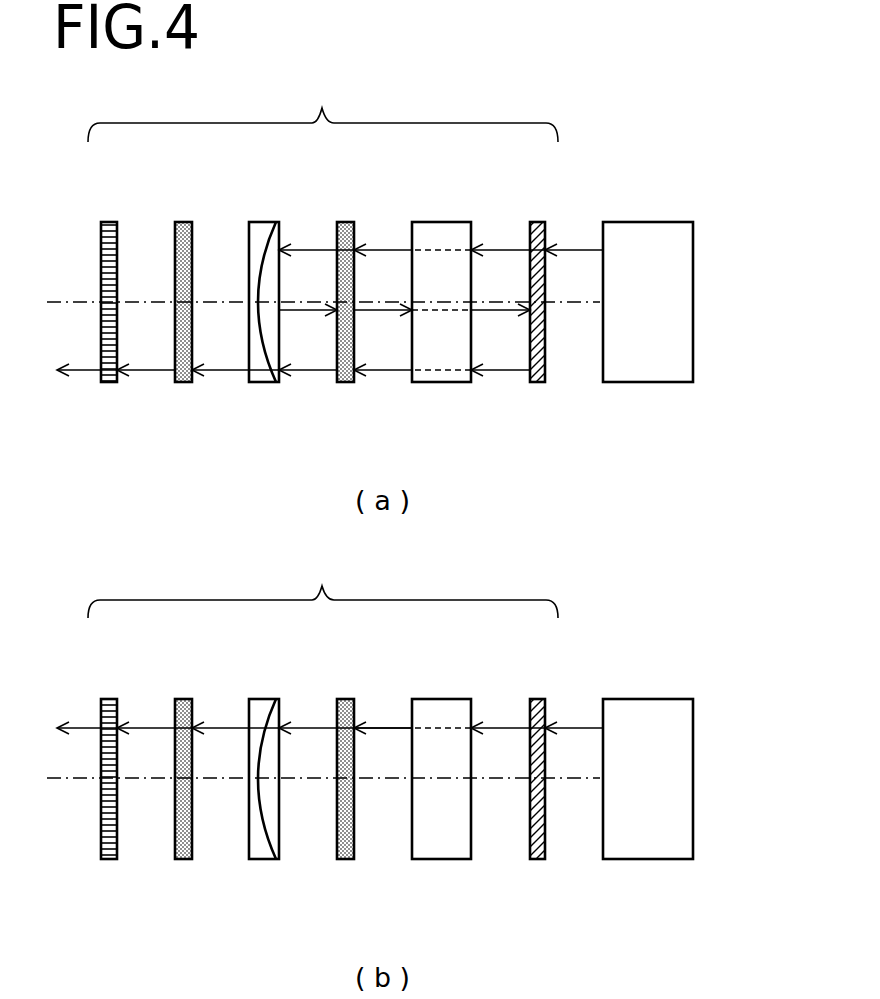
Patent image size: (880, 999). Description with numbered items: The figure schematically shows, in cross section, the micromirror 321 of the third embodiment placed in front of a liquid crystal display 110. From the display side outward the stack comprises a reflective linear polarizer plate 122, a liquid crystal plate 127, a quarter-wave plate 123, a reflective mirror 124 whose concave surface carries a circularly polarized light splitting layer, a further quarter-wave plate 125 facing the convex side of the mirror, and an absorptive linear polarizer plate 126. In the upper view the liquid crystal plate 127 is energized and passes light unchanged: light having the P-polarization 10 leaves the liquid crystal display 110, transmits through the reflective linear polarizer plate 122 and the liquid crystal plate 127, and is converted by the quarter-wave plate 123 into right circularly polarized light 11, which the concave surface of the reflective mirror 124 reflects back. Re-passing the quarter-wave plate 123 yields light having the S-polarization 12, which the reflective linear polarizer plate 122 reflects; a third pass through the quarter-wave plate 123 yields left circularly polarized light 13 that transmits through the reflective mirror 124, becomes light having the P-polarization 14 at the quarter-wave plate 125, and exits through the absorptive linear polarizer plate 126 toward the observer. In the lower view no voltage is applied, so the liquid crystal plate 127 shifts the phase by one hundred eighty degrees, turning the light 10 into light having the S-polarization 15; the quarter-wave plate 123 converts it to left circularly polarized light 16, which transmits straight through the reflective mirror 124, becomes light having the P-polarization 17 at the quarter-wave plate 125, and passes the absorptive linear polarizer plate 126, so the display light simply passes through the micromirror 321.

The micromirror 321 is at (323, 341).
The liquid crystal display 110 is at (645, 383).
The reflective linear polarizer plate 122 is at (537, 383).
The liquid crystal plate 127 is at (441, 383).
The quarter-wave plate 123 is at (346, 383).
The reflective mirror 124 is at (262, 383).
The quarter-wave plate 125 is at (184, 383).
The absorptive linear polarizer plate 126 is at (110, 383).
The light having the P-polarization 10 is at (393, 250).
The right circularly polarized light 11 is at (313, 302).
The light having the S-polarization 12 is at (388, 302).
The left circularly polarized light 13 is at (225, 372).
The light having the P-polarization 14 is at (78, 372).
The light having the S-polarization 15 is at (397, 728).
The left circularly polarized light 16 is at (222, 728).
The light having the P-polarization 17 is at (80, 728).